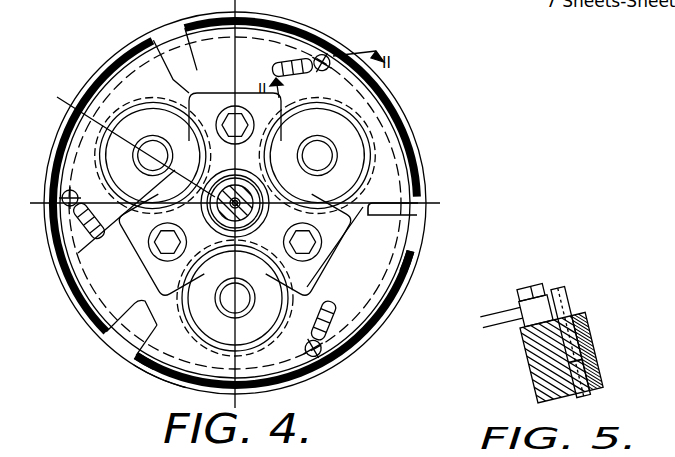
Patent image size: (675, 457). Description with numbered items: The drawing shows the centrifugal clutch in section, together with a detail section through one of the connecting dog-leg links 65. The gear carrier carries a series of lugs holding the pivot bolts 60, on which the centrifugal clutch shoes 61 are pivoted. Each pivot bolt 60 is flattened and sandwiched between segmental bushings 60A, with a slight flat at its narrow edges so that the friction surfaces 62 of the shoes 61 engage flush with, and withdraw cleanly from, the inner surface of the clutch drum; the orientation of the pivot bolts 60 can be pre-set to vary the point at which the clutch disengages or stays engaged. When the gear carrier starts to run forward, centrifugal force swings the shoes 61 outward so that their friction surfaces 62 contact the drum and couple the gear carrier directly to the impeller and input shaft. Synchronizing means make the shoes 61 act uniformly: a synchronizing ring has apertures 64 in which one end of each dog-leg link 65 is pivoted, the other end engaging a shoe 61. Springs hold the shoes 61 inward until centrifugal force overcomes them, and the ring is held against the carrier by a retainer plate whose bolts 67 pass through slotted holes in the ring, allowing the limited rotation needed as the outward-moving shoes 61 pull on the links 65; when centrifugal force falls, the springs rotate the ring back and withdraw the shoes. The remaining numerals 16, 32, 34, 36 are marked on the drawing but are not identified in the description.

In FIG. 4, the sun gear shaft 16 is at (200, 187).
In FIG. 4, the housing key 32 is at (100, 313).
In FIG. 4, the housing key tip 34 is at (140, 320).
In FIG. 4, the housing ring segment 36 is at (160, 377).
In FIG. 4, the pivot bolt 60 is at (402, 283).
In FIG. 4, the segmental bushing 60A is at (398, 252).
In FIG. 4, the centrifugal clutch shoe 61 is at (392, 140).
In FIG. 5, the centrifugal clutch shoe 61 is at (550, 380).
In FIG. 4, the friction surface 62 is at (330, 147).
In FIG. 5, the aperture 64 is at (518, 290).
In FIG. 4, the dog-leg link 65 is at (316, 56).
In FIG. 5, the dog-leg link 65 is at (553, 308).
In FIG. 4, the bolt 67 is at (376, 233).